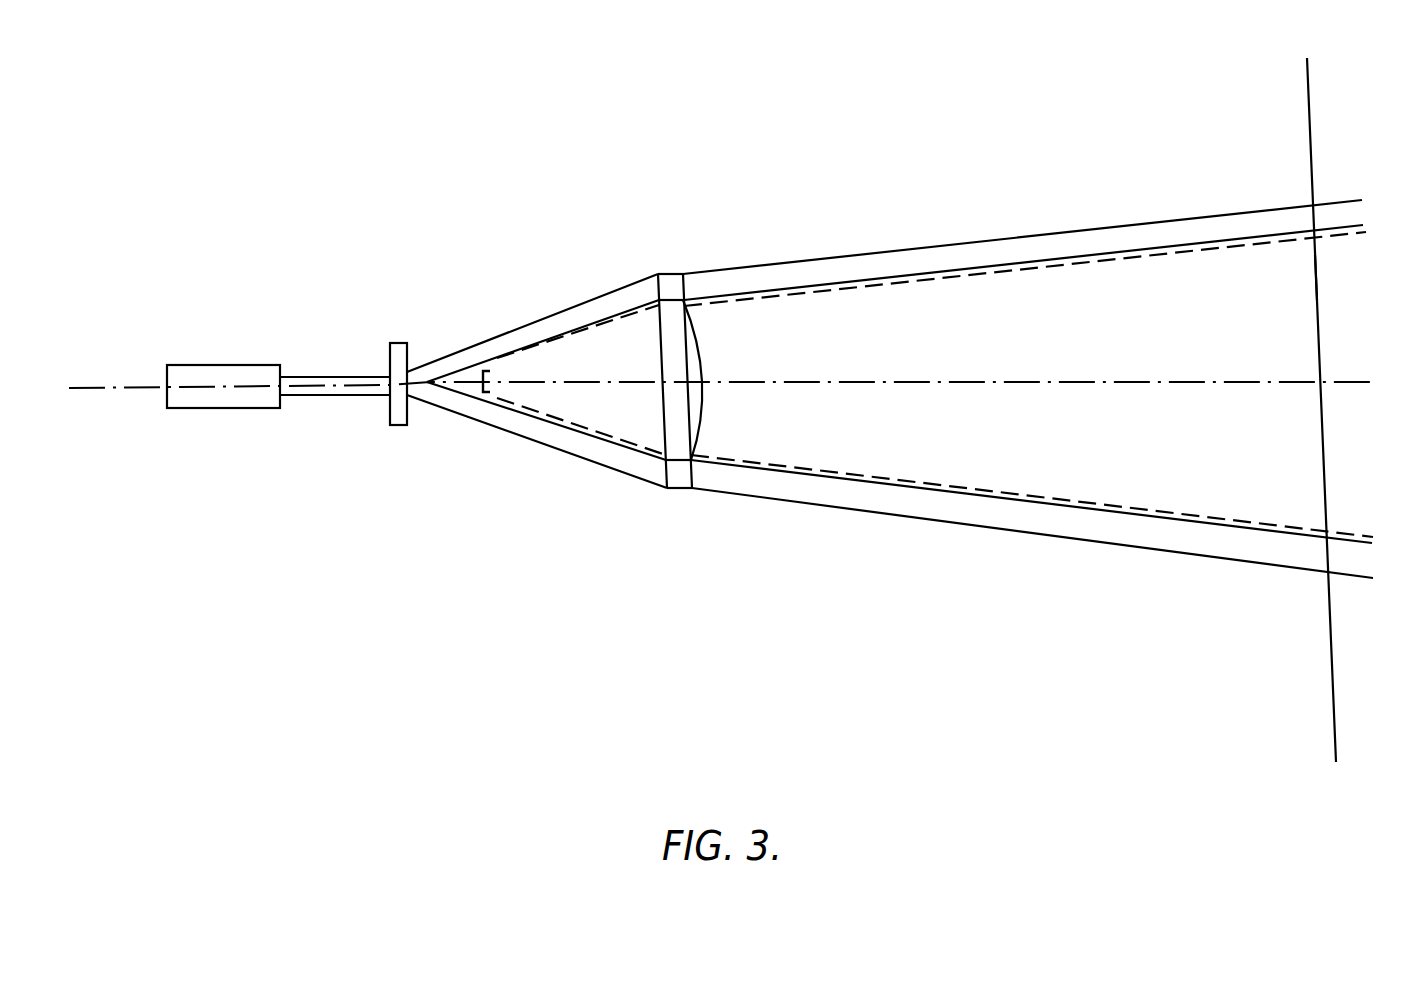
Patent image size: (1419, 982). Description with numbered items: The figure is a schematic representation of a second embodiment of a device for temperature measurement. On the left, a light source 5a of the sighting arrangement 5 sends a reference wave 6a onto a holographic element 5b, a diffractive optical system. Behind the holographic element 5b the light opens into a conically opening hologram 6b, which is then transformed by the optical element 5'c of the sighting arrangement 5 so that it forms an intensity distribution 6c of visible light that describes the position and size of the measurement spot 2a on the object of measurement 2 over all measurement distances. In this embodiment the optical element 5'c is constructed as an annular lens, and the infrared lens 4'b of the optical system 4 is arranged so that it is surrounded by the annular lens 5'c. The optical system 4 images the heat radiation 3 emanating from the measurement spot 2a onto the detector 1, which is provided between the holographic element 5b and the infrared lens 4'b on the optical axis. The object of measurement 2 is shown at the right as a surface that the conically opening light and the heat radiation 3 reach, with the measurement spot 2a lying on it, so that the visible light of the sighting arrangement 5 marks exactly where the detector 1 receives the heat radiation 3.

The detector 1 is at (489, 394).
The object of measurement 2 is at (1331, 697).
The measurement spot 2a is at (1312, 261).
The heat radiation 3 is at (997, 270).
The optical system 4 is at (749, 380).
The infrared lens 4'b is at (623, 407).
The sighting arrangement 5 is at (770, 342).
The light source 5a is at (219, 375).
The holographic element 5b is at (400, 356).
The optical element 5'c is at (680, 421).
The reference wave 6a is at (345, 392).
The conically opening hologram 6b is at (577, 313).
The intensity distribution 6c is at (865, 265).